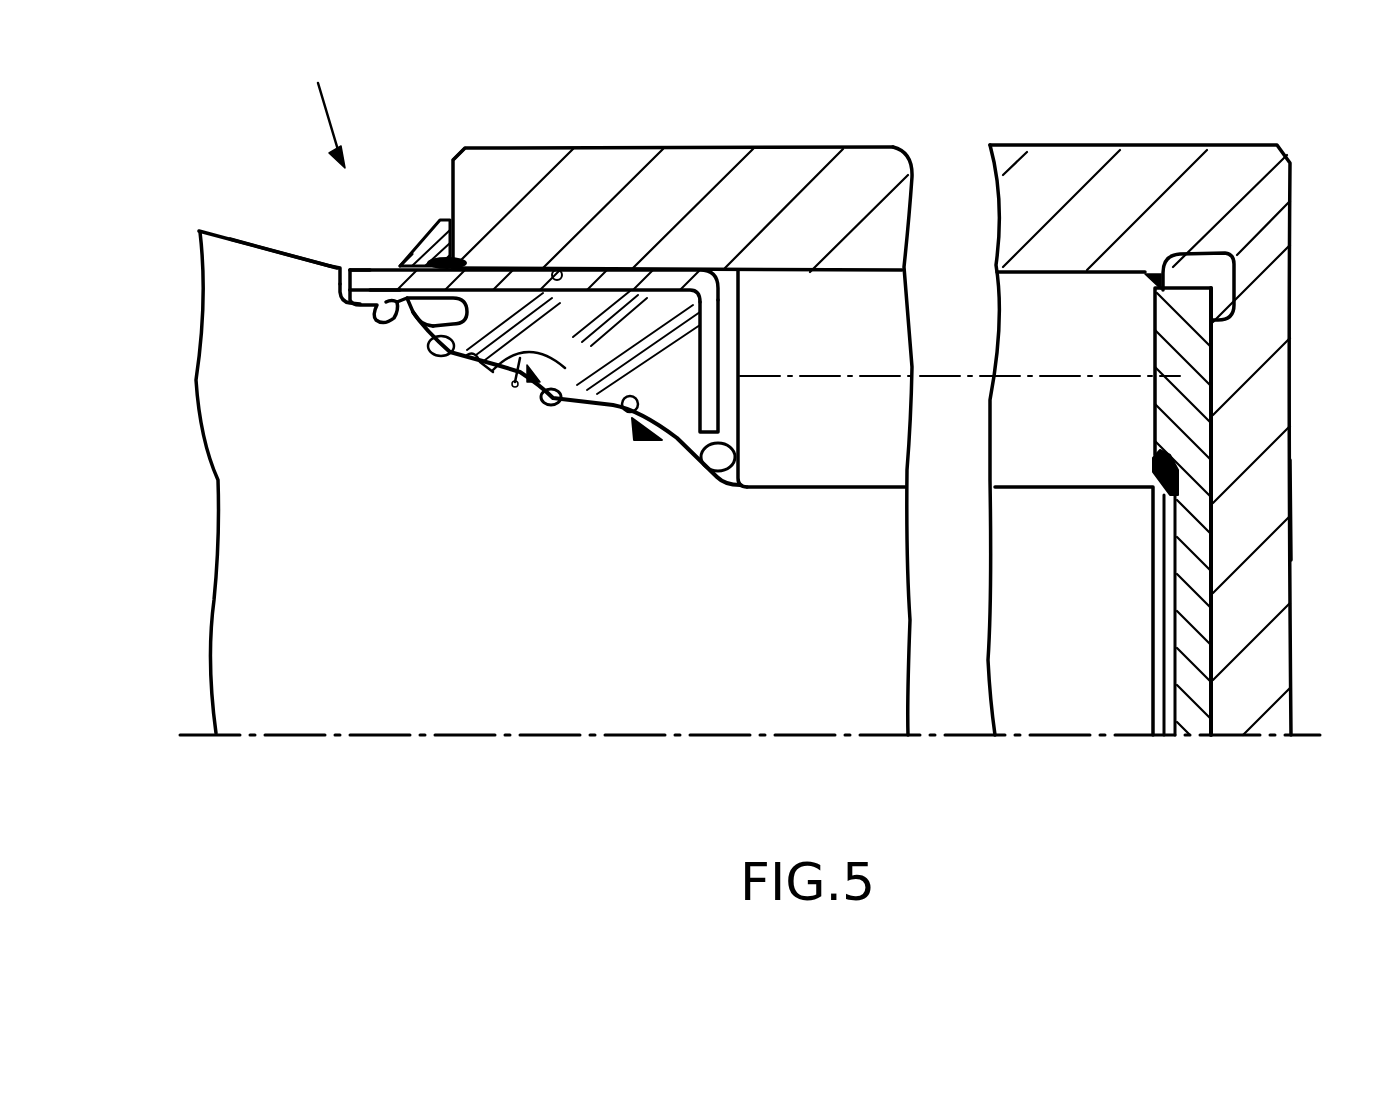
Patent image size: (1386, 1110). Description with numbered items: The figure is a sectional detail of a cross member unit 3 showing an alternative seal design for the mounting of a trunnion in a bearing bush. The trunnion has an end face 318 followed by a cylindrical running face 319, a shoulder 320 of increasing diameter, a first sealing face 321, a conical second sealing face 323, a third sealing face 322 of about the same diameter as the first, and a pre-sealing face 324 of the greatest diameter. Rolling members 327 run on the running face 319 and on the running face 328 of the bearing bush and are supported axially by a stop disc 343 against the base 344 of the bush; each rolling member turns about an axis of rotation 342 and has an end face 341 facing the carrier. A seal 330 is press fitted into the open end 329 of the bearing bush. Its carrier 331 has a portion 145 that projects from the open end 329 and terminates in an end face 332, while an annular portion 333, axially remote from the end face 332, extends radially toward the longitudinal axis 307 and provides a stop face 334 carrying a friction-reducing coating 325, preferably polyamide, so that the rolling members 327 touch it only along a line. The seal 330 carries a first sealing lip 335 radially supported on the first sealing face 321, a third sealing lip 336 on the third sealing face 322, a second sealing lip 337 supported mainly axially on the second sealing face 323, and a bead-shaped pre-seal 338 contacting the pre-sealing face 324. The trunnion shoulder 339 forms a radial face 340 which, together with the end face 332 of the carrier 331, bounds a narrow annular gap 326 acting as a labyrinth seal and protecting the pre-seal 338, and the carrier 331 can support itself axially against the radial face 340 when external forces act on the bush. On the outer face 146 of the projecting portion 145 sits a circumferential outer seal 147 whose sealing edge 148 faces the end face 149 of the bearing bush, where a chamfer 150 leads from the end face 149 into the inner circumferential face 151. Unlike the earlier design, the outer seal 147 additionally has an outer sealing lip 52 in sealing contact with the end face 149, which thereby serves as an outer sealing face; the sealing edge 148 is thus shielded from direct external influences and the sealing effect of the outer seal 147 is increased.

The housing 3 is at (222, 480).
The outer sealing lip 52 is at (425, 228).
The portion 145 is at (399, 263).
The outer face 146 is at (360, 270).
The outer seal 147 is at (383, 290).
The sealing edge 148 is at (478, 258).
The end face 149 is at (438, 176).
The chamfer 150 is at (450, 244).
The inner circumferential face 151 is at (556, 270).
The longitudinal axis 307 is at (862, 738).
The end face 318 is at (1210, 609).
The cylindrical running face 319 is at (1107, 482).
The shoulder 320 is at (738, 462).
The first sealing face 321 is at (670, 444).
The third sealing face 322 is at (553, 407).
The second sealing face 323 is at (448, 366).
The pre-sealing face 324 is at (425, 336).
The friction-reducing coating 325 is at (706, 362).
The annular gap 326 is at (350, 270).
The rolling members 327 is at (1062, 361).
The running face 328 is at (1102, 275).
The open end 329 is at (323, 104).
The seal 330 is at (500, 372).
The carrier 331 is at (610, 278).
The end face 332 is at (344, 300).
The annular portion 333 is at (722, 333).
The stop face 334 is at (738, 301).
The first sealing lip 335 is at (613, 412).
The third sealing lip 336 is at (492, 352).
The second sealing lip 337 is at (420, 345).
The pre-seal 338 is at (380, 315).
The shoulder 339 is at (304, 259).
The radial face 340 is at (340, 267).
The end face 341 is at (716, 478).
The axis of rotation 342 is at (848, 378).
The stop disc 343 is at (1193, 423).
The base 344 is at (1285, 503).